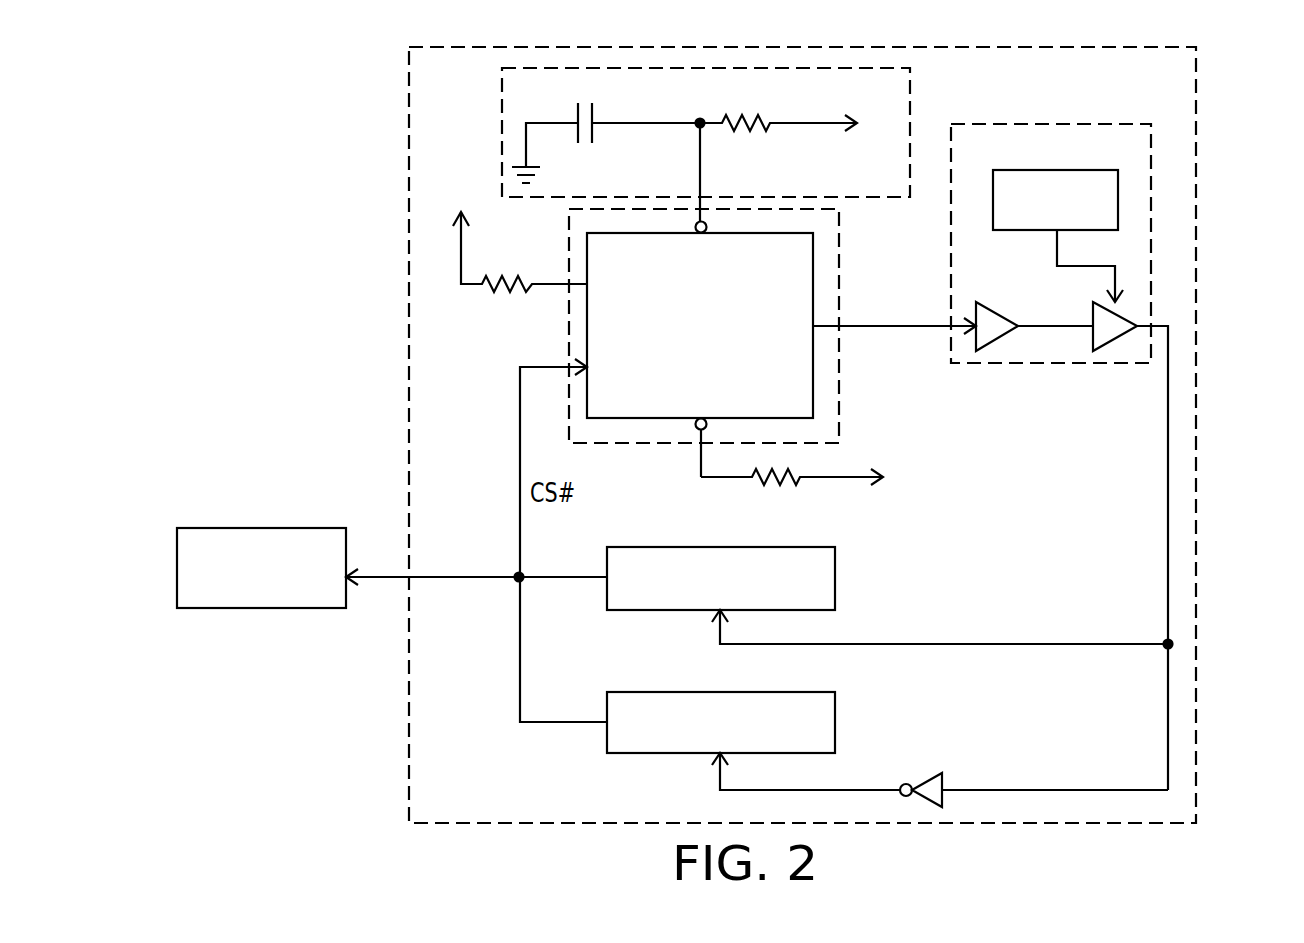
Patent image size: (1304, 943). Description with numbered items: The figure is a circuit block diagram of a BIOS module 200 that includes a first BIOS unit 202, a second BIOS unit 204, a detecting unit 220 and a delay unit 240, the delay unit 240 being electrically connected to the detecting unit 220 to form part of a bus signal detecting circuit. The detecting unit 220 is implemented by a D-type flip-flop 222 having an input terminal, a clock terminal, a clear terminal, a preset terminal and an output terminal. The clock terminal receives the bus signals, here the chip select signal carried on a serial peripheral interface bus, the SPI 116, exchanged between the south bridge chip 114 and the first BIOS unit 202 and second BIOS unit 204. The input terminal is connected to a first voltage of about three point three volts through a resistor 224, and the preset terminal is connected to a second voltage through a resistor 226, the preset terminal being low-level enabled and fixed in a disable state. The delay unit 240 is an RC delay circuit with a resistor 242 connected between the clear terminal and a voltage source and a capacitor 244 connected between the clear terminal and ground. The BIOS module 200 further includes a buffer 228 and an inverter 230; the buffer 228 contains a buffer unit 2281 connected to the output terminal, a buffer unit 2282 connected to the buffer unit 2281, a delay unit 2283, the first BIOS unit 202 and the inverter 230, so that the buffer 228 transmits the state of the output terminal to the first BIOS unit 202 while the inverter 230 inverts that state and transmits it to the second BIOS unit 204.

The BIOS module 200 is at (828, 46).
The delay unit 240 is at (912, 100).
The resistor 242 is at (752, 120).
The capacitor 244 is at (592, 144).
The buffer 228 is at (1153, 157).
The delay unit 2283 is at (1067, 170).
The buffer unit 2281 is at (1000, 340).
The buffer unit 2282 is at (1112, 340).
The detecting unit 220 is at (841, 240).
The D-type flip-flop 222 is at (815, 298).
The resistor 224 is at (512, 291).
The resistor 226 is at (780, 488).
The first BIOS unit 202 is at (706, 547).
The second BIOS unit 204 is at (706, 692).
The inverter 230 is at (930, 773).
The south bridge chip 114 is at (293, 528).
The SPI 116 is at (453, 580).